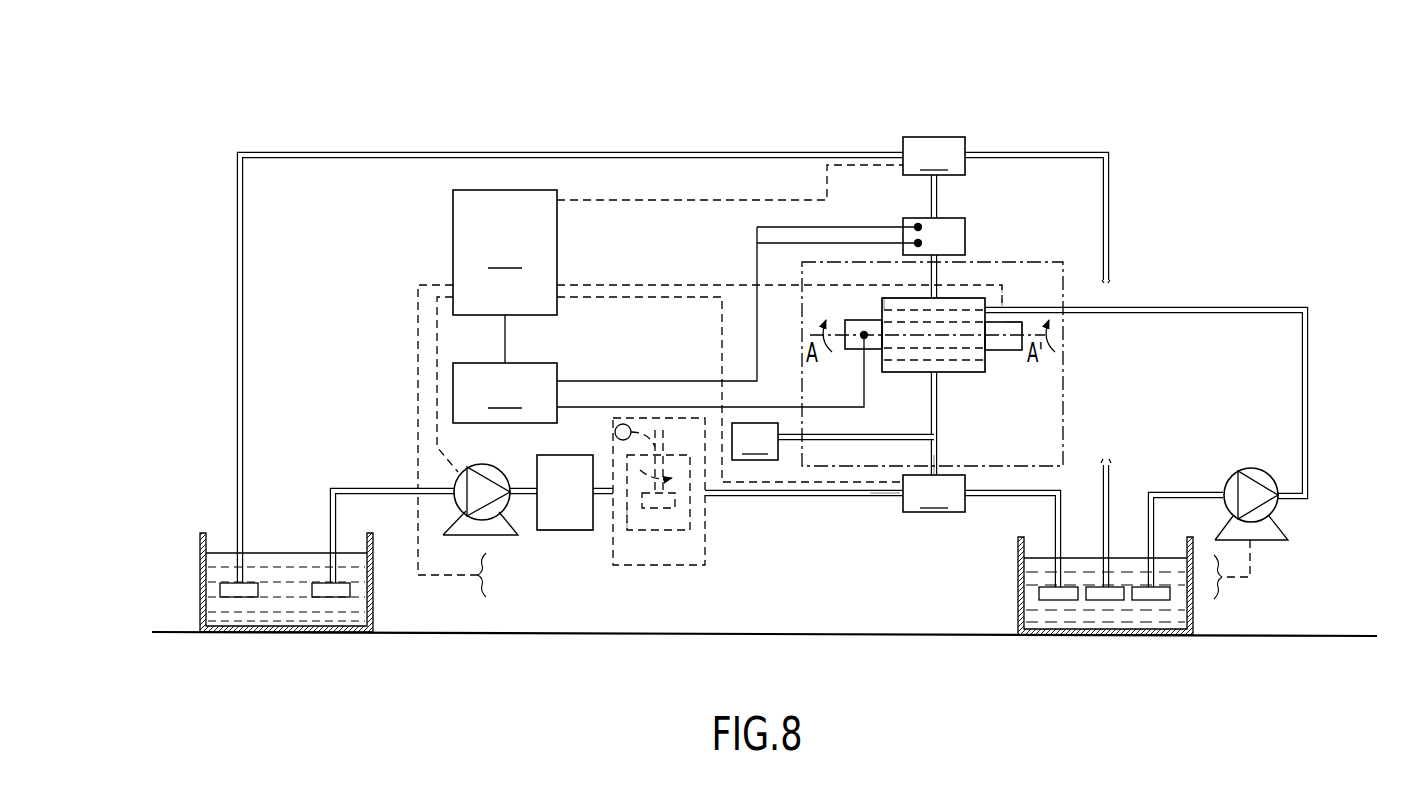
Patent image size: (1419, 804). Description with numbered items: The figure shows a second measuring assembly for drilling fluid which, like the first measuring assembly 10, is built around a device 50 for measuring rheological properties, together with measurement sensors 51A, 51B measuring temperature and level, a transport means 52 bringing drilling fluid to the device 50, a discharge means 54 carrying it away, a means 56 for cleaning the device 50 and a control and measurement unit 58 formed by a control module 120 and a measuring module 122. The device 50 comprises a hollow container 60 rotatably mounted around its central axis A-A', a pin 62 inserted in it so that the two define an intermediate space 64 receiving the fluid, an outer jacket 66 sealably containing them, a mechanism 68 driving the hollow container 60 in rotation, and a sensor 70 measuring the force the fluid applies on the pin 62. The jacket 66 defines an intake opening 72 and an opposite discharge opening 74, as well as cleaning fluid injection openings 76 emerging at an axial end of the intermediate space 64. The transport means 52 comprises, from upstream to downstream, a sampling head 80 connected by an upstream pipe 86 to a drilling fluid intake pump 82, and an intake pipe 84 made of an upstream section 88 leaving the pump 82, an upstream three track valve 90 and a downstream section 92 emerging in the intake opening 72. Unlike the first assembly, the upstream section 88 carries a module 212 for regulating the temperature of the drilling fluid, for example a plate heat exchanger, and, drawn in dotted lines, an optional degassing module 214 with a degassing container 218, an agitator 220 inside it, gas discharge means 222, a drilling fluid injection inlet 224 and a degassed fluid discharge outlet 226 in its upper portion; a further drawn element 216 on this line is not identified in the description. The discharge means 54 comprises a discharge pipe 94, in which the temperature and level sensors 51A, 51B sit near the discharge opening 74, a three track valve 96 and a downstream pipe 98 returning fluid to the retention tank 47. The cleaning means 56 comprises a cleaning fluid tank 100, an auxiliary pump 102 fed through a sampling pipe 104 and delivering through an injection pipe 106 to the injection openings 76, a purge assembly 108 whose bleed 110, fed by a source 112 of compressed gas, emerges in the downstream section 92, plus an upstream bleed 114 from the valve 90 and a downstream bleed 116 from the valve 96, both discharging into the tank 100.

The measuring assembly 10 is at (1265, 184).
The retention tank 47 is at (373, 607).
The device for measuring rheological properties 50 is at (1078, 372).
The temperature sensor 51A is at (915, 224).
The level sensor 51B is at (912, 242).
The transport means 52 is at (841, 534).
The discharge means 54 is at (789, 134).
The cleaning means 56 is at (1327, 312).
The control and measurement unit 58 is at (415, 220).
The hollow container 60 is at (975, 372).
The pin 62 is at (985, 310).
The intermediate space 64 is at (967, 355).
The outer jacket 66 is at (888, 294).
The driving mechanism 68 is at (1012, 328).
The force sensor 70 is at (855, 349).
The intake opening 72 is at (939, 373).
The discharge opening 74 is at (968, 297).
The cleaning fluid injection openings 76 is at (1005, 303).
The sampling head 80 is at (333, 597).
The drilling fluid intake pump 82 is at (505, 468).
The drilling fluid intake pipe 84 is at (868, 509).
The upstream pipe 86 is at (370, 488).
The upstream section 88 is at (763, 496).
The upstream three track valve 90 is at (934, 493).
The downstream section 92 is at (938, 460).
The discharge pipe 94 is at (940, 205).
The downstream three track valve 96 is at (934, 156).
The downstream pipe 98 is at (513, 150).
The cleaning fluid tank 100 is at (1193, 600).
The auxiliary pump 102 is at (1230, 480).
The sampling pipe 104 is at (1175, 492).
The injection pipe 106 is at (1308, 398).
The purge assembly 108 is at (780, 474).
The bleed 110 is at (877, 435).
The source of compressed gas 112 is at (755, 441).
The upstream bleed 114 is at (1055, 510).
The downstream bleed 116 is at (1062, 150).
The control module 120 is at (505, 252).
The measuring module 122 is at (505, 393).
The temperature regulating module 212 is at (569, 538).
The degassing module 214 is at (668, 538).
The filter housing 216 is at (556, 455).
The degassing container 218 is at (698, 518).
The agitator 220 is at (670, 418).
The gas discharge means 222 is at (641, 418).
The drilling fluid injection inlet 224 is at (628, 508).
The degassed drilling fluid discharge outlet 226 is at (702, 498).